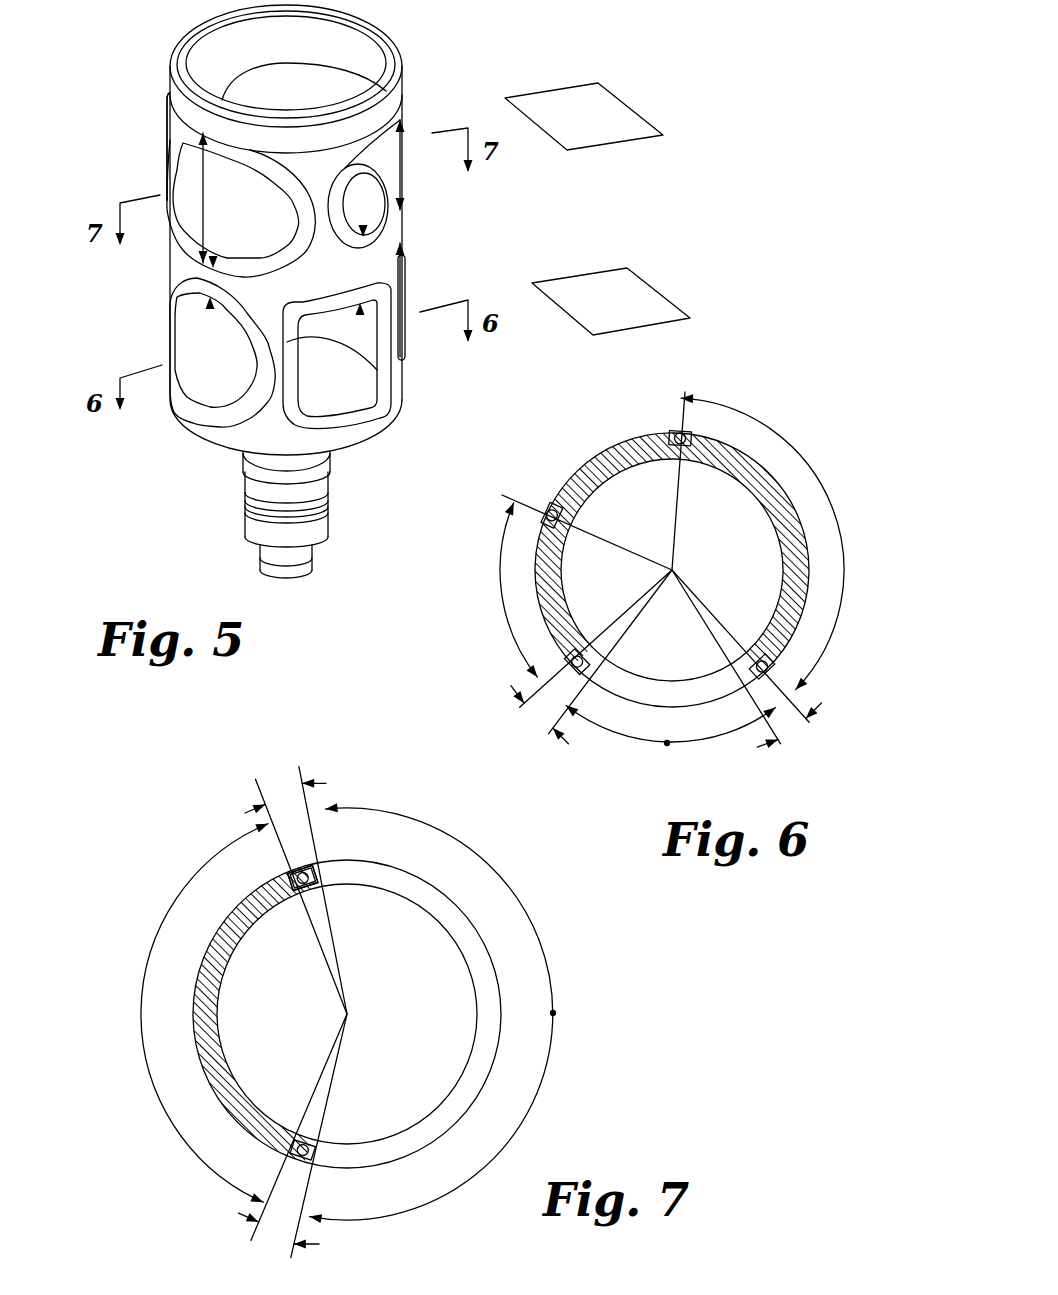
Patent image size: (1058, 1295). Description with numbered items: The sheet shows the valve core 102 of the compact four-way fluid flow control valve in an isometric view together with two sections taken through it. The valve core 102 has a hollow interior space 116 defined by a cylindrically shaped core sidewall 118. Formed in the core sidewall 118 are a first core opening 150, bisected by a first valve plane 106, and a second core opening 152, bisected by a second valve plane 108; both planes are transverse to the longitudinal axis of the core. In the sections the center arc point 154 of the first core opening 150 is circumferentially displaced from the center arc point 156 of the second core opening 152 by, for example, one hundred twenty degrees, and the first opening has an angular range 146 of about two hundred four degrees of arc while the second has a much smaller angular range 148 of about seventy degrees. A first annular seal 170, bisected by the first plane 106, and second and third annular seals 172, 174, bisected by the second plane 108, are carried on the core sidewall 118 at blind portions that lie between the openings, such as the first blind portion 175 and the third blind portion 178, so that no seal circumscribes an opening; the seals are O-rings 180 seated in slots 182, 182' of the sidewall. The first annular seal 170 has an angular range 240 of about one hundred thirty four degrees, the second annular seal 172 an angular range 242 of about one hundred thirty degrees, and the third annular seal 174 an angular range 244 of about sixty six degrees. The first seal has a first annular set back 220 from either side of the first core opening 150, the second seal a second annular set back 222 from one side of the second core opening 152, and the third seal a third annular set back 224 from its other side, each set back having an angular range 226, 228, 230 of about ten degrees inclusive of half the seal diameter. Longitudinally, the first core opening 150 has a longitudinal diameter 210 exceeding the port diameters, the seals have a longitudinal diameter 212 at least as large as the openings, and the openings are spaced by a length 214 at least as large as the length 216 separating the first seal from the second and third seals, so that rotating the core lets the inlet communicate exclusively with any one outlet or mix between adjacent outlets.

In FIG. 5, the valve core 102 is at (448, 85).
In FIG. 5, the first valve plane 106 is at (646, 118).
In FIG. 5, the second valve plane 108 is at (668, 298).
In FIG. 6, the hollow interior space 116 is at (672, 555).
In FIG. 7, the hollow interior space 116 is at (347, 1014).
In FIG. 5, the core sidewall 118 is at (286, 230).
In FIG. 6, the core sidewall 118 is at (795, 513).
In FIG. 7, the core sidewall 118 is at (205, 1080).
In FIG. 7, the angular range 146 is at (530, 925).
In FIG. 6, the angular range 148 is at (627, 740).
In FIG. 5, the first core opening 150 is at (385, 230).
In FIG. 5, the second core opening 152 is at (362, 412).
In FIG. 6, the second core opening 152 is at (697, 700).
In FIG. 7, the center arc point 154 is at (553, 1013).
In FIG. 6, the center arc point 156 is at (667, 743).
In FIG. 5, the first annular seal 170 is at (168, 110).
In FIG. 7, the first annular seal 170 is at (289, 870).
In FIG. 5, the second annular seal 172 is at (405, 345).
In FIG. 6, the second annular seal 172 is at (756, 650).
In FIG. 5, the third annular seal 174 is at (197, 410).
In FIG. 6, the third annular seal 174 is at (580, 650).
In FIG. 5, the first blind portion 175 is at (178, 165).
In FIG. 7, the first blind portion 175 is at (223, 922).
In FIG. 5, the third blind portion 178 is at (193, 340).
In FIG. 6, the third blind portion 178 is at (535, 612).
In FIG. 5, the O-rings 180 is at (168, 146).
In FIG. 7, the O-rings 180 is at (303, 877).
In FIG. 6, the slots 182 is at (667, 470).
In FIG. 7, the slots 182 is at (229, 871).
In FIG. 6, the retaining clip 182' is at (584, 515).
In FIG. 5, the longitudinal diameter 210 is at (403, 170).
In FIG. 5, the longitudinal diameter 212 is at (204, 208).
In FIG. 5, the length 214 is at (363, 267).
In FIG. 5, the length 216 is at (205, 277).
In FIG. 7, the first annular set back 220 is at (309, 872).
In FIG. 6, the second annular set back 222 is at (718, 680).
In FIG. 6, the third annular set back 224 is at (593, 683).
In FIG. 7, the angular range 226 is at (278, 780).
In FIG. 6, the angular range 228 is at (800, 740).
In FIG. 6, the angular range 230 is at (537, 725).
In FIG. 7, the angular range 240 is at (141, 980).
In FIG. 6, the angular range 242 is at (790, 443).
In FIG. 6, the angular range 244 is at (500, 593).